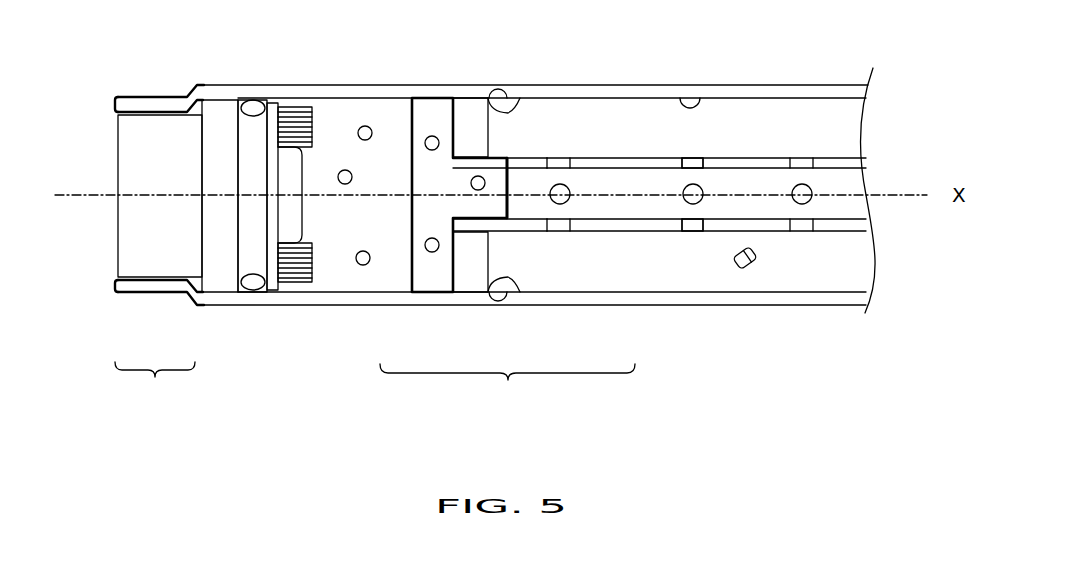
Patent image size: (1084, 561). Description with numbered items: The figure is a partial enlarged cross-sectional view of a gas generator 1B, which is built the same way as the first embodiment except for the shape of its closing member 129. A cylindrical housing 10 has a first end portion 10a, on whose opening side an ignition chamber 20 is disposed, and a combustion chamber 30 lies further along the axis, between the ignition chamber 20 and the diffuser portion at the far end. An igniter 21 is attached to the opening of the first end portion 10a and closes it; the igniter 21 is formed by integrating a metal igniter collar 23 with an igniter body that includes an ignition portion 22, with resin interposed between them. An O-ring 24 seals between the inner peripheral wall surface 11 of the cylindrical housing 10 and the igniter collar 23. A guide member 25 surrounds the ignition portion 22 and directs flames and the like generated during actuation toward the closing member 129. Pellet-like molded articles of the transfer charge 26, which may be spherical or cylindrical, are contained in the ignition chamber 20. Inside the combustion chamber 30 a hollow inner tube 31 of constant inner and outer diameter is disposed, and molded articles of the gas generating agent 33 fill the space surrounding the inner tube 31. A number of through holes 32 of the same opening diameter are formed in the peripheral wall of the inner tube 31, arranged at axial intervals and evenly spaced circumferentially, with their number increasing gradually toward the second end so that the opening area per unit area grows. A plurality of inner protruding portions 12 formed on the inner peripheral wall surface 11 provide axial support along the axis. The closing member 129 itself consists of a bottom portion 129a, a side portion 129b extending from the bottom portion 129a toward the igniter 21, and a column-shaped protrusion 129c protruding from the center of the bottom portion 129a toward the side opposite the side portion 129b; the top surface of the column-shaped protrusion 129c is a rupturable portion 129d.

The gas generator 1B is at (591, 68).
The cylindrical housing 10 is at (760, 85).
The first end portion 10a is at (117, 100).
The inner peripheral wall surface 11 is at (698, 104).
The inner protruding portions 12 is at (520, 104).
The ignition chamber 20 is at (368, 229).
The igniter 21 is at (155, 383).
The ignition portion 22 is at (287, 218).
The igniter collar 23 is at (152, 262).
The O-ring 24 is at (254, 104).
The guide member 25 is at (297, 112).
The molded article of the transfer charge 26 is at (365, 125).
The combustion chamber 30 is at (798, 141).
The inner tube 31 is at (665, 240).
The through holes 32 is at (692, 158).
The molded article of the gas generating agent 33 is at (745, 268).
The closing member 129 is at (507, 389).
The bottom portion 129a is at (457, 268).
The side portion 129b is at (431, 293).
The column-shaped protrusion 129c is at (494, 222).
The rupturable portion 129d is at (508, 203).